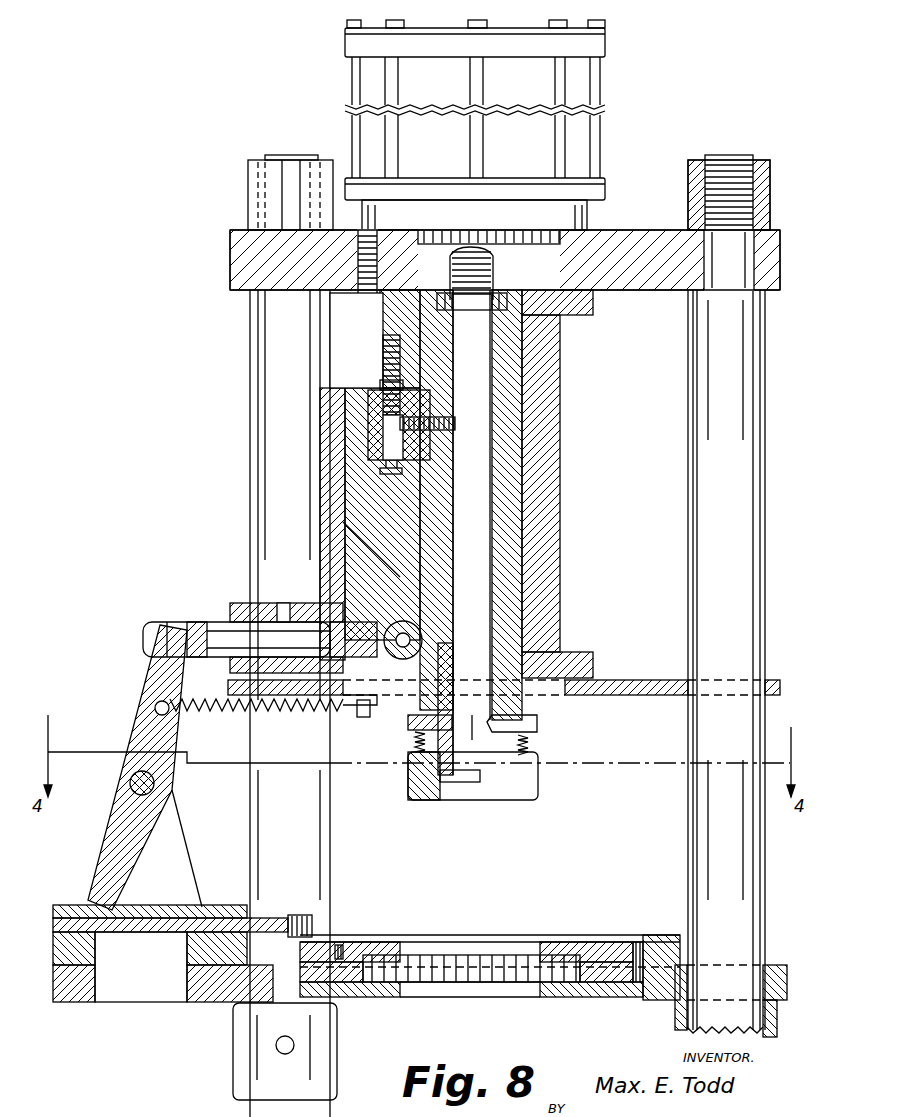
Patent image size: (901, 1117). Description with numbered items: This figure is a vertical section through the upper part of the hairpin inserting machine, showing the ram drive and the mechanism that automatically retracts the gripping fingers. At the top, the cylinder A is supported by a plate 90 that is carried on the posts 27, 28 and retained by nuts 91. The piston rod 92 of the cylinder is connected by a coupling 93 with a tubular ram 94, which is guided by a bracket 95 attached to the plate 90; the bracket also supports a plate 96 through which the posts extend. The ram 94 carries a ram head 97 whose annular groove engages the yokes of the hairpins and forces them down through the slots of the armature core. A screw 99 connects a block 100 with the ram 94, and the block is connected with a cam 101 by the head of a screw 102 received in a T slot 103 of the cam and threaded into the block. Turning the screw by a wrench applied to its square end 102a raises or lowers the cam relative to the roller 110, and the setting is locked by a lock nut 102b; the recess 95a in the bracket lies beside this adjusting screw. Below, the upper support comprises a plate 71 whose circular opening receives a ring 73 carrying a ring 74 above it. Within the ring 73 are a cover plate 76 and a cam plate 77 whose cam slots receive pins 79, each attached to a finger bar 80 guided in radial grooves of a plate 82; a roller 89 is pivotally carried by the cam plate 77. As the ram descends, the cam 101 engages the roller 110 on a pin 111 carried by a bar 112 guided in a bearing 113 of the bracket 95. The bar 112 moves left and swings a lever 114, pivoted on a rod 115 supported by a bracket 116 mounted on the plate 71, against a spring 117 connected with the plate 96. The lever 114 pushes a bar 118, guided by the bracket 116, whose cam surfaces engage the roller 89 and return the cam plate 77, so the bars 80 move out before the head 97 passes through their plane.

The cylinder A is at (600, 80).
The post 27 is at (766, 340).
The post 28 is at (250, 364).
The plate 71 is at (788, 970).
The ring 73 is at (682, 962).
The ring 74 is at (665, 935).
The cover plate 76 is at (566, 942).
The cam plate 77 is at (378, 945).
The pin 79 is at (338, 944).
The bar 80 is at (606, 997).
The plate 82 is at (357, 997).
The roller 89 is at (296, 915).
The plate 90 is at (622, 230).
The nut 91 is at (248, 186).
The piston rod 92 is at (494, 246).
The coupling 93 is at (487, 285).
The tubular ram 94 is at (517, 360).
The bracket 95 is at (322, 525).
The cavity 95a is at (383, 330).
The plate 96 is at (614, 682).
The ram head 97 is at (538, 723).
The screw 99 is at (454, 420).
The block 100 is at (430, 447).
The cam 101 is at (393, 571).
The screw 102 is at (402, 470).
The square end 102a is at (388, 340).
The lock nut 102b is at (404, 385).
The T slot 103 is at (400, 474).
The roller 110 is at (398, 627).
The pin 111 is at (410, 640).
The bar 112 is at (212, 624).
The bearing 113 is at (243, 612).
The lever 114 is at (142, 725).
The rod 115 is at (130, 783).
The bracket 116 is at (186, 840).
The spring 117 is at (207, 714).
The bar 118 is at (150, 918).